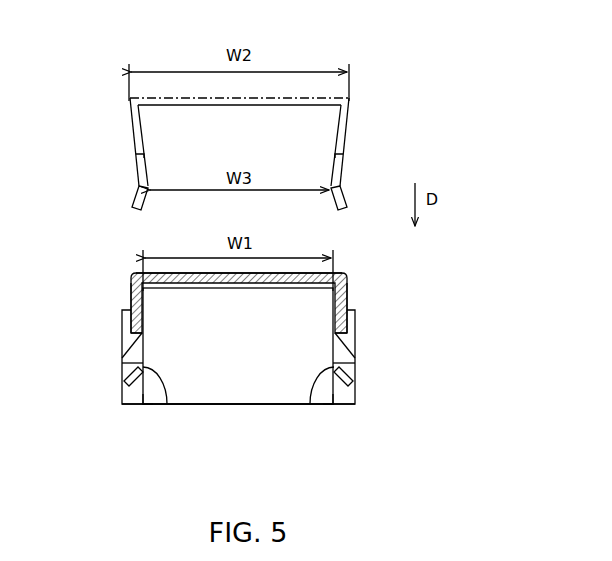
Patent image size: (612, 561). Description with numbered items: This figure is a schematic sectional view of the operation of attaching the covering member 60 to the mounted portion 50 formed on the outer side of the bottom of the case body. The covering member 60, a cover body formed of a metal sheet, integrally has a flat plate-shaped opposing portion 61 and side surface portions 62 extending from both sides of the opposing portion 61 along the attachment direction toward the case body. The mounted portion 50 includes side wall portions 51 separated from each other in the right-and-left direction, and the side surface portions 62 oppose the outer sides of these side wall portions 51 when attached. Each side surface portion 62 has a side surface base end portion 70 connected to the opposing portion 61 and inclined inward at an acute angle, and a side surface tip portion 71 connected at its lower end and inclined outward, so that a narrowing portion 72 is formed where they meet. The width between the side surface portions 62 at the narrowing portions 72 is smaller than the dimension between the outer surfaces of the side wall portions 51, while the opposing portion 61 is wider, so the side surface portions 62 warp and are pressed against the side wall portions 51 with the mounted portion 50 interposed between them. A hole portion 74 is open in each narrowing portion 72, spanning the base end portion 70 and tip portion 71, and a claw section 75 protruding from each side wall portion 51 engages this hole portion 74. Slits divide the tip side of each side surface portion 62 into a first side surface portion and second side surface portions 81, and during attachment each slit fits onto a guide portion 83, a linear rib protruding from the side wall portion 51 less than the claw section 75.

The actuator mounted portion 50 is at (257, 394).
The side wall portion 51 is at (143, 404).
The covering member 60 is at (357, 263).
The opposing portion 61 is at (139, 274).
The side surface portion 62 is at (130, 290).
The side surface base end portion 70 is at (121, 322).
The side surface tip portion 71 is at (125, 379).
The narrowing portion 72 is at (167, 404).
The hole portion 74 is at (133, 343).
The claw section 75 is at (121, 363).
The second side surface portion 81 is at (129, 303).
The guide portion 83 is at (130, 397).